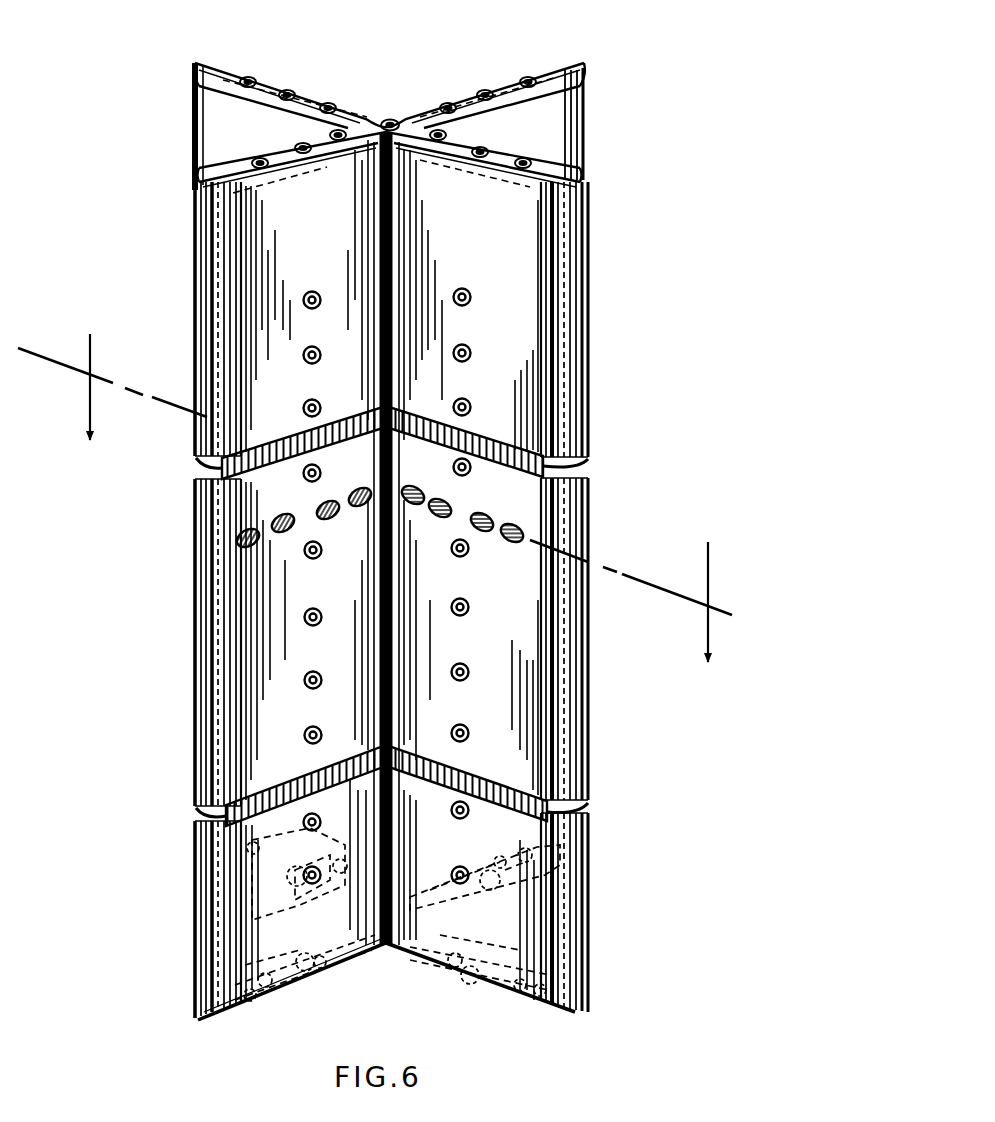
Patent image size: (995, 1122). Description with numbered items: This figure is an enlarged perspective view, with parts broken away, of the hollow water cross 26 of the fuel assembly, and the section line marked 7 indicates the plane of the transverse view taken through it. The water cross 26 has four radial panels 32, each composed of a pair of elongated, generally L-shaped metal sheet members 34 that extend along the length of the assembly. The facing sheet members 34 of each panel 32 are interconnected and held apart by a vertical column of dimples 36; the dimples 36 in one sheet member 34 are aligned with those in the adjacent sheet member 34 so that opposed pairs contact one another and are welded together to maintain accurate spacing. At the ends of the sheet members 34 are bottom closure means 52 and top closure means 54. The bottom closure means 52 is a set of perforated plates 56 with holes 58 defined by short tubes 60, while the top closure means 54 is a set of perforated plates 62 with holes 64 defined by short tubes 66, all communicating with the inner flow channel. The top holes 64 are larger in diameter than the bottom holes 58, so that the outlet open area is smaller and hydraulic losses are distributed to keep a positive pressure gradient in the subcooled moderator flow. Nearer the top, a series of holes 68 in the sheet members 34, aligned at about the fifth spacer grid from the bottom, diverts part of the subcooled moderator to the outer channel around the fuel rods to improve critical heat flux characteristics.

The water cross 26 is at (614, 82).
The radial panel 32 is at (186, 97).
The sheet member 34 is at (444, 108).
The dimple 36 is at (320, 405).
The bottom closure means 52 is at (498, 983).
The top closure means 54 is at (311, 90).
The bottom perforated plate 56 is at (270, 858).
The bottom hole 58 is at (255, 840).
The bottom short tube 60 is at (300, 908).
The top perforated plate 62 is at (361, 126).
The top hole 64 is at (244, 77).
The top short tube 66 is at (255, 78).
The coolant diversion hole 68 is at (354, 490).
The section line 7- 7 is at (375, 485).